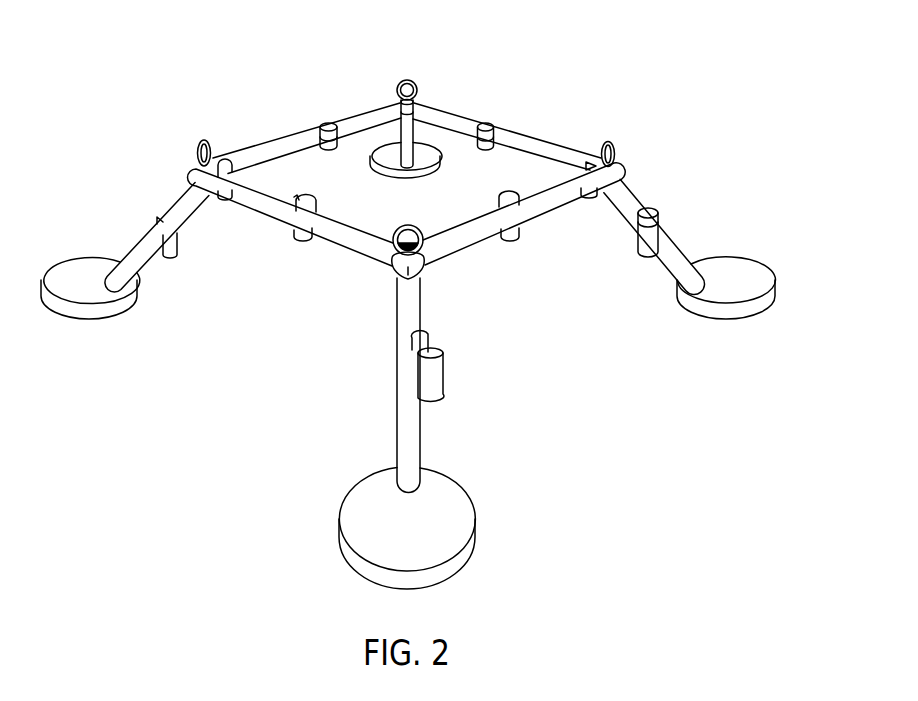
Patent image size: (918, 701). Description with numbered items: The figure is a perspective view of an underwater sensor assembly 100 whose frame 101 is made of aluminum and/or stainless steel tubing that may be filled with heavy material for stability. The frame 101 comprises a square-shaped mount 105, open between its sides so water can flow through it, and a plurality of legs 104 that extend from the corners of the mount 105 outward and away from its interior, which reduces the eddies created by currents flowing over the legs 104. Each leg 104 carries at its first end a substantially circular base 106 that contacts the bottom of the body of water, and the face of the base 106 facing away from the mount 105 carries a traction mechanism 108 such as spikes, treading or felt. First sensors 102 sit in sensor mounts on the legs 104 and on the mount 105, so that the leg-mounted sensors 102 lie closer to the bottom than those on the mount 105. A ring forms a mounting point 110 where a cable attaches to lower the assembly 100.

The underwater sensor assembly 100 is at (645, 78).
The frame 101 is at (334, 115).
The first sensor 102 is at (489, 125).
The leg 104 is at (397, 382).
The mount 105 is at (264, 125).
The base 106 is at (461, 485).
The traction mechanism 108 is at (458, 574).
The mounting point 110 is at (408, 80).